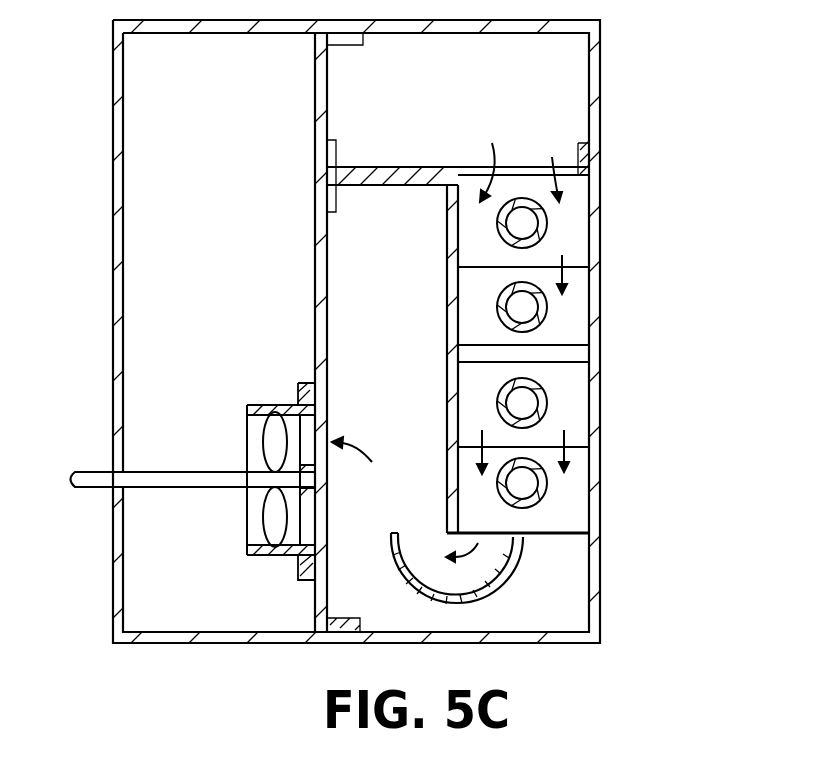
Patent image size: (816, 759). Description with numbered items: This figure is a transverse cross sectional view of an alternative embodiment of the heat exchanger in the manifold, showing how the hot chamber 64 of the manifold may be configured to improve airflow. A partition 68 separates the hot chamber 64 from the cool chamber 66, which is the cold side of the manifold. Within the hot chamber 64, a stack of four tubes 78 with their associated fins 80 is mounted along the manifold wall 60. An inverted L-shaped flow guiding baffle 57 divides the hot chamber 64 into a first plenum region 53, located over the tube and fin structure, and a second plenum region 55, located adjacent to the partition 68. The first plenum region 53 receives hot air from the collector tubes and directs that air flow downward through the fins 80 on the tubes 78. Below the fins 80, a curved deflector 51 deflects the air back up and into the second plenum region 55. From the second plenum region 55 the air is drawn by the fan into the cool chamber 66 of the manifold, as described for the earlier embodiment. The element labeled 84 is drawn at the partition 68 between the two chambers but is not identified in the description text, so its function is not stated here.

The curved deflector 51 is at (398, 570).
The first plenum region 53 is at (473, 102).
The second plenum region 55 is at (406, 392).
The inverted L-shaped flow guiding baffle 57 is at (447, 250).
The manifold wall 60 is at (112, 232).
The hot chamber 64 is at (618, 613).
The cool chamber 66 is at (230, 170).
The partition 68 is at (315, 318).
The tubes 78 is at (555, 213).
The fins 80 is at (577, 299).
The blower fan unit 84 is at (272, 514).